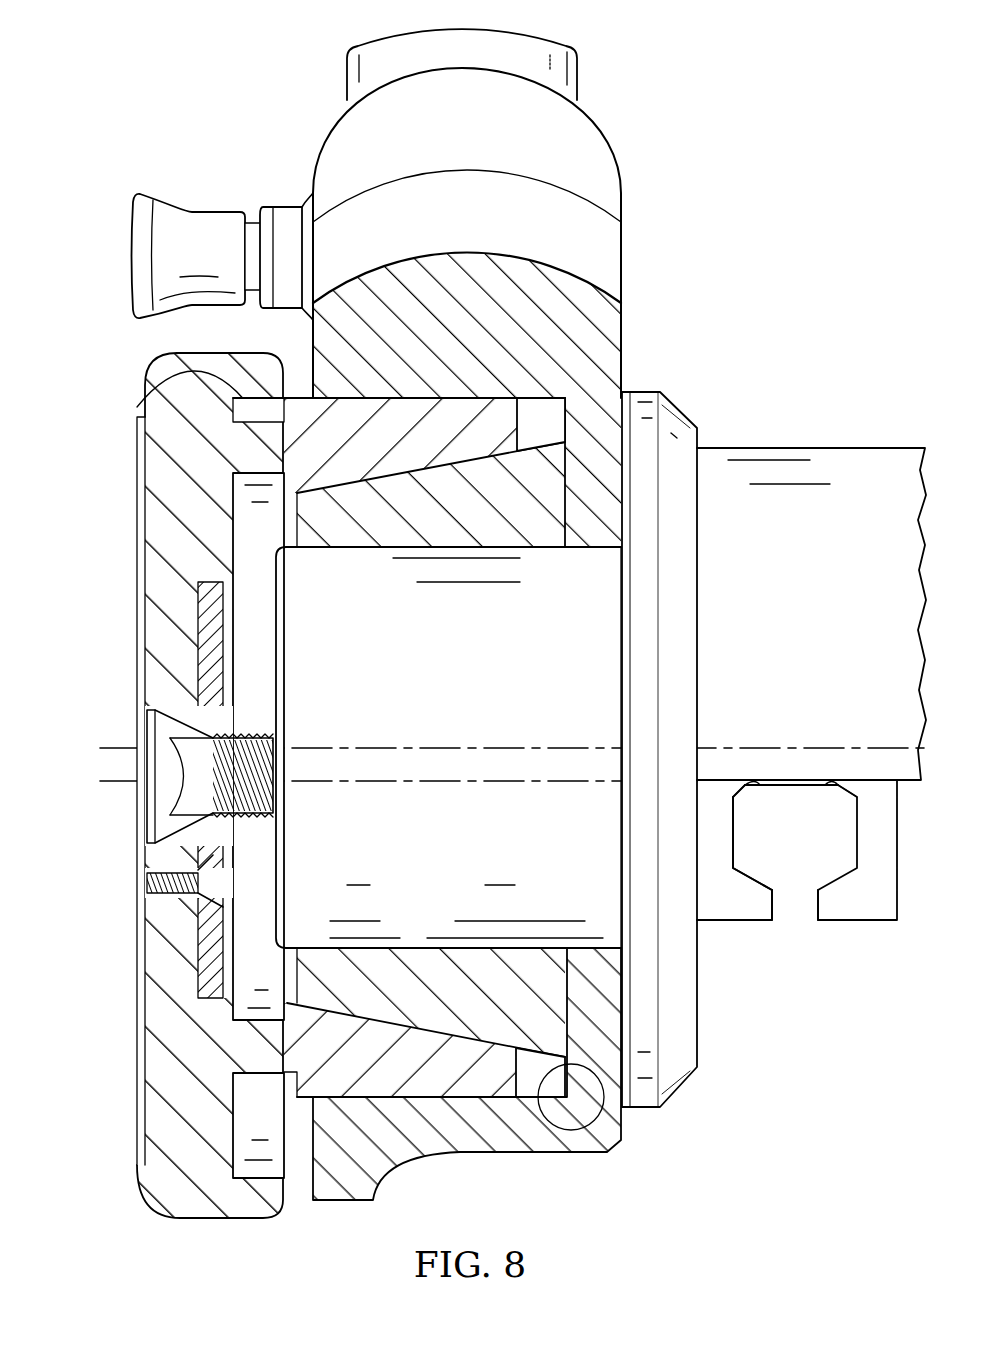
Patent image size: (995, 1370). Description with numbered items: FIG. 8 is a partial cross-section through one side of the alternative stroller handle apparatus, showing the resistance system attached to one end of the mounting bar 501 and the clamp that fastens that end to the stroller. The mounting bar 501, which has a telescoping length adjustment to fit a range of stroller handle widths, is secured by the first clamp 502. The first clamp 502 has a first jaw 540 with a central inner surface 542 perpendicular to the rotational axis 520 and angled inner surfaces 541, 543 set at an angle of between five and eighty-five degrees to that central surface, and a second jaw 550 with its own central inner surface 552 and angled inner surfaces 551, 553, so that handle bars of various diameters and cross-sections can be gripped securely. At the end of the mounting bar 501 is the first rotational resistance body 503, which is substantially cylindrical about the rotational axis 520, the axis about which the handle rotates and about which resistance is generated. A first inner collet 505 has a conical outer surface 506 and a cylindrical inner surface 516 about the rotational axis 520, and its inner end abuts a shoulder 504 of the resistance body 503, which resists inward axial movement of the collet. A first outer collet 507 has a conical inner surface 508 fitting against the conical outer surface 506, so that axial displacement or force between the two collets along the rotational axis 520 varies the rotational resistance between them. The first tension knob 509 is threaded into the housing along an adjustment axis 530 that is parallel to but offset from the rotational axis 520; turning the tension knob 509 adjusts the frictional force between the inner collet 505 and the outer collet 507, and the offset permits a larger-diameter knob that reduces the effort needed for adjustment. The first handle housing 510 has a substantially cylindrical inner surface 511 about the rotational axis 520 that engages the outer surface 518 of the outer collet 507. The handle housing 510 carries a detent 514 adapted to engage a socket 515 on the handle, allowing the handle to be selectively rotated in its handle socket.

The mounting bar 501 is at (823, 455).
The first clamp 502 is at (716, 864).
The first rotational resistance body 503 is at (474, 661).
The shoulder 504 is at (663, 1090).
The first inner collet 505 is at (550, 538).
The conical outer surface 506 is at (547, 440).
The first outer collet 507 is at (357, 451).
The conical inner surface 508 is at (295, 532).
The first tension knob 509 is at (160, 477).
The first handle housing 510 is at (612, 325).
The cylindrical inner surface 511 is at (577, 1132).
The detent 514 is at (213, 207).
The socket 515 is at (140, 400).
The cylindrical inner surface 516 is at (418, 947).
The outer surface 518 is at (302, 1102).
The rotational axis 520 is at (112, 745).
The adjustment axis 530 is at (112, 783).
The first jaw 540 is at (743, 910).
The angled inner surface 541 is at (752, 880).
The central inner surface 542 is at (737, 828).
The angled inner surface 543 is at (783, 781).
The second jaw 550 is at (848, 910).
The angled inner surface 551 is at (812, 877).
The central inner surface 552 is at (858, 842).
The angled inner surface 553 is at (805, 781).